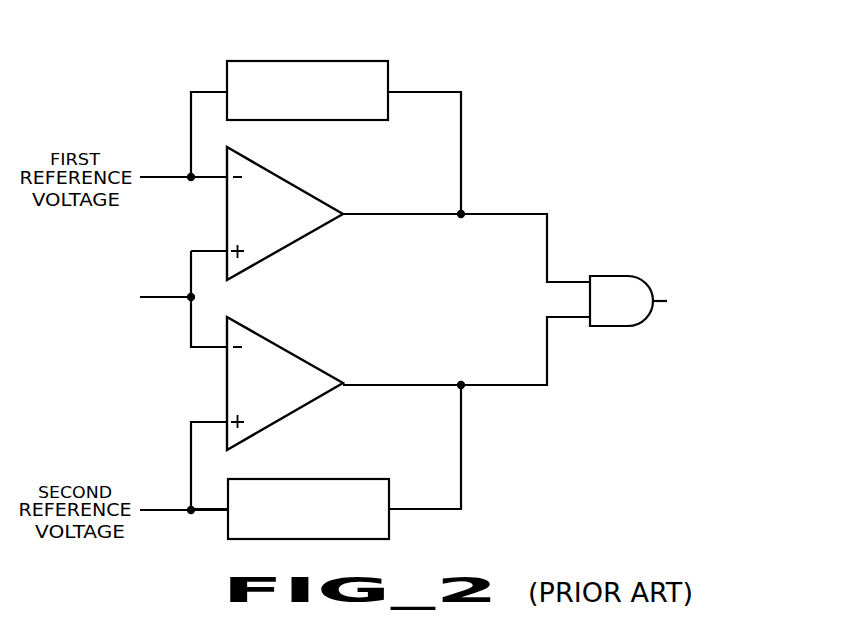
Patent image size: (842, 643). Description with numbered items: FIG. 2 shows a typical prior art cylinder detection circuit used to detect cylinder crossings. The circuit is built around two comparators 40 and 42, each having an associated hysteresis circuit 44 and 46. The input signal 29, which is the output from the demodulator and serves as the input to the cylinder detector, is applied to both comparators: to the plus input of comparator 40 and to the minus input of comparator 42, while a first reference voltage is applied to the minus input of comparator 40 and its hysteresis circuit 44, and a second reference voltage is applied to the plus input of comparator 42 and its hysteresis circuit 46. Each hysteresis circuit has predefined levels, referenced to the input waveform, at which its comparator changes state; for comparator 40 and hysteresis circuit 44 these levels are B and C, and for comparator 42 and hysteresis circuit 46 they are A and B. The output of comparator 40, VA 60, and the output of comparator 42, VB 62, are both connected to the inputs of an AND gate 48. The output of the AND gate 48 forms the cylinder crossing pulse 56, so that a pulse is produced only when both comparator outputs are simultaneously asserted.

The input signal 29 is at (92, 270).
The comparator 40 is at (285, 177).
The comparator 42 is at (290, 352).
The hysteresis circuit 44 is at (333, 61).
The hysteresis circuit 46 is at (333, 479).
The AND gate 48 is at (632, 276).
The cylinder crossing pulse 56 is at (729, 272).
The comparator output VA 60 is at (491, 193).
The comparator output VB 62 is at (488, 360).